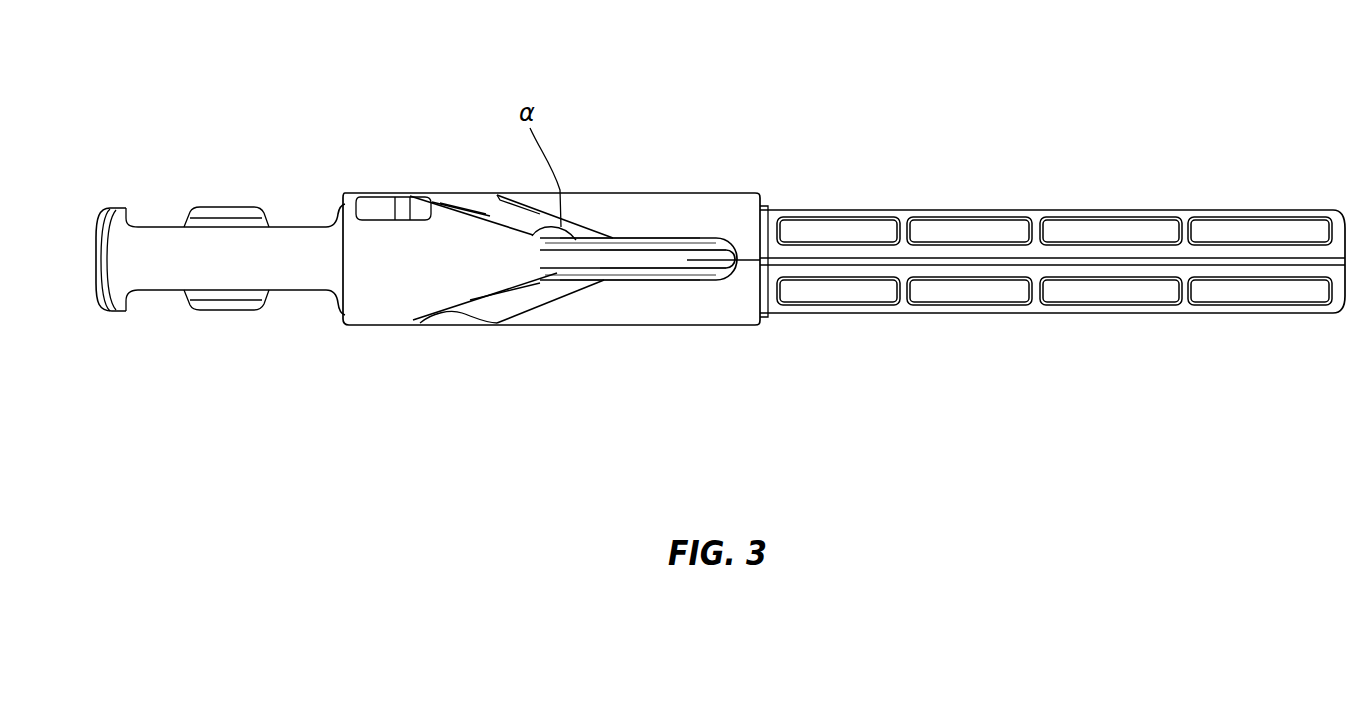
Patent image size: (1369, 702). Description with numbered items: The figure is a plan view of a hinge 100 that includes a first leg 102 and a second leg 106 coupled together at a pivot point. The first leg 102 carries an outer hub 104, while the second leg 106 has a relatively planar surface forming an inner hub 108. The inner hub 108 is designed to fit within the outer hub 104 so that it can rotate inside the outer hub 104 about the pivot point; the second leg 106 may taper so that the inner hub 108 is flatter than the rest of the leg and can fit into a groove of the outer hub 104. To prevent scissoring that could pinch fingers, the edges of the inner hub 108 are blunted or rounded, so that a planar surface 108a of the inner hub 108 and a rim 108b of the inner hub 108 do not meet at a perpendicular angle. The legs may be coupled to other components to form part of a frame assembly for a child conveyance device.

The hinge 100 is at (820, 128).
The first leg 102 is at (1008, 307).
The outer hub 104 is at (600, 192).
The second leg 106 is at (248, 311).
The inner hub 108 is at (635, 262).
The planar surface 108a is at (633, 247).
The rim 108b is at (662, 258).